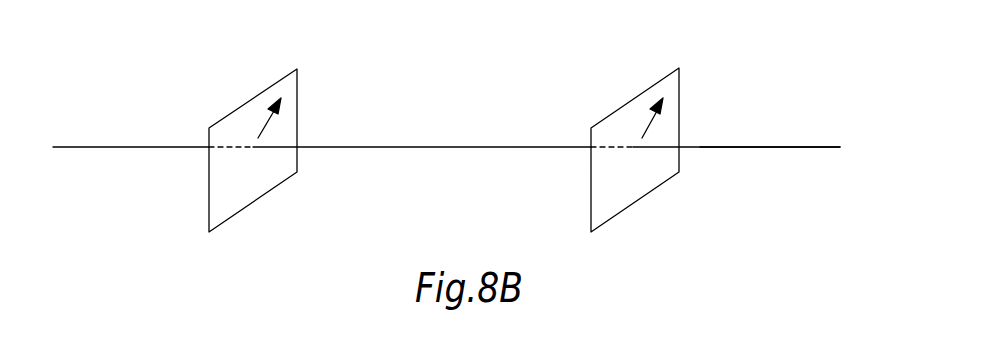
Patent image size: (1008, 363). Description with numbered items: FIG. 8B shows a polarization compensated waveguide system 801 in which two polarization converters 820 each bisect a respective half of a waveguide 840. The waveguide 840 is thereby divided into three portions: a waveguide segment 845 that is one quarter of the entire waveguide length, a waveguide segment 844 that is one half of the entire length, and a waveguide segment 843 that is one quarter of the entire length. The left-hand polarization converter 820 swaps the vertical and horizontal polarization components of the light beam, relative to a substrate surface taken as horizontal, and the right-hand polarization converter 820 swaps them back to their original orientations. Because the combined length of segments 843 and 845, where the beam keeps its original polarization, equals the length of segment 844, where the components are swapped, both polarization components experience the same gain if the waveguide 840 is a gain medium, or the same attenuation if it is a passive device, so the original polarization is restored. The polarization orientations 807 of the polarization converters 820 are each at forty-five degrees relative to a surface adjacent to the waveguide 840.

The polarization compensated waveguide system 801 is at (798, 46).
The polarization orientation 807 is at (266, 124).
The polarization converter 820 is at (291, 110).
The waveguide 840 is at (759, 130).
The waveguide segment 843 is at (714, 148).
The waveguide segment 844 is at (435, 148).
The waveguide segment 845 is at (92, 148).